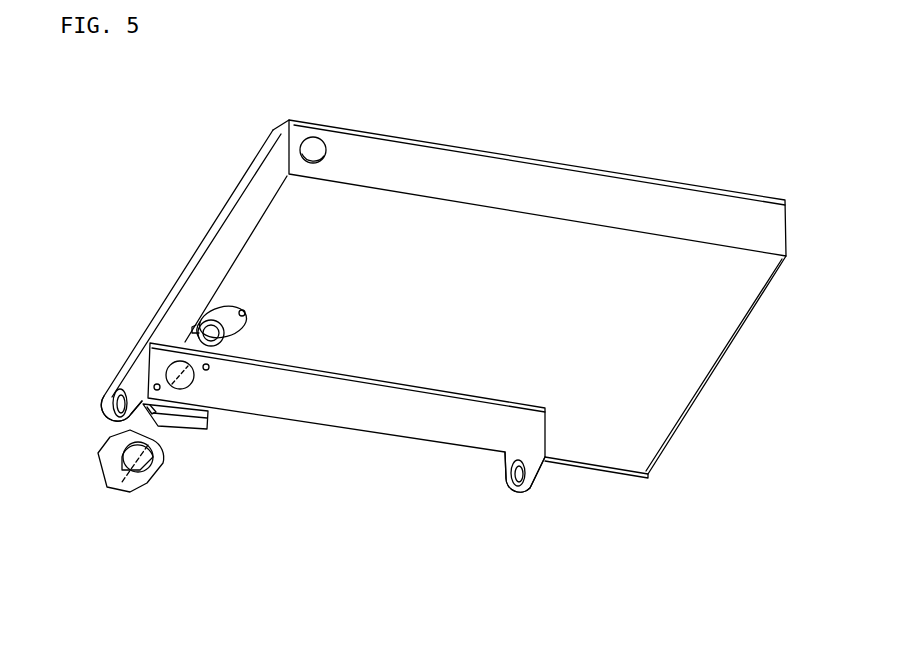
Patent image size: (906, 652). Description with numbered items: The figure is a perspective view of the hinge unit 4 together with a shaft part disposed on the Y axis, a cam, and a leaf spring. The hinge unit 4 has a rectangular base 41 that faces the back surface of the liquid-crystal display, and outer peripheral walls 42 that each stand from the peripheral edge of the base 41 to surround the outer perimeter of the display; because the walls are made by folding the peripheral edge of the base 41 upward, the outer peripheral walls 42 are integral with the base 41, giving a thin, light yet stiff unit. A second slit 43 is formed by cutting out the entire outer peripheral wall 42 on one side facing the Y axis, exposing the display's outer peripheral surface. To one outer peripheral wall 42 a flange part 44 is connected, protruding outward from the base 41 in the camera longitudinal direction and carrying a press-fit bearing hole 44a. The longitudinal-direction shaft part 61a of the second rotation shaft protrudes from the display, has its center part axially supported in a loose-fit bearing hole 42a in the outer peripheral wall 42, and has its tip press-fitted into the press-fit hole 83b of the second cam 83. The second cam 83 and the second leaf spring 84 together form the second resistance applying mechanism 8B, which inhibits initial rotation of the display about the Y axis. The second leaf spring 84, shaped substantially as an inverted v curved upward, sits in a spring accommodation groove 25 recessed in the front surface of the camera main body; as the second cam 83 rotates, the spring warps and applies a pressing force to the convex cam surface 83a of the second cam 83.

The hinge unit 4 is at (703, 122).
The rectangular base 41 is at (665, 420).
The outer peripheral wall 42 is at (258, 188).
The loose-fit bearing hole 42a is at (315, 148).
The second slit 43 is at (705, 350).
The flange part 44 is at (113, 377).
The press-fit bearing hole 44a is at (113, 403).
The longitudinal-direction shaft part 61a is at (200, 318).
The spring accommodation groove 25 is at (175, 423).
The second leaf spring 84 is at (110, 440).
The second cam 83 is at (142, 521).
The convex cam surface 83a is at (103, 490).
The press-fit hole 83b is at (160, 501).
The second resistance applying mechanism 8B is at (52, 527).